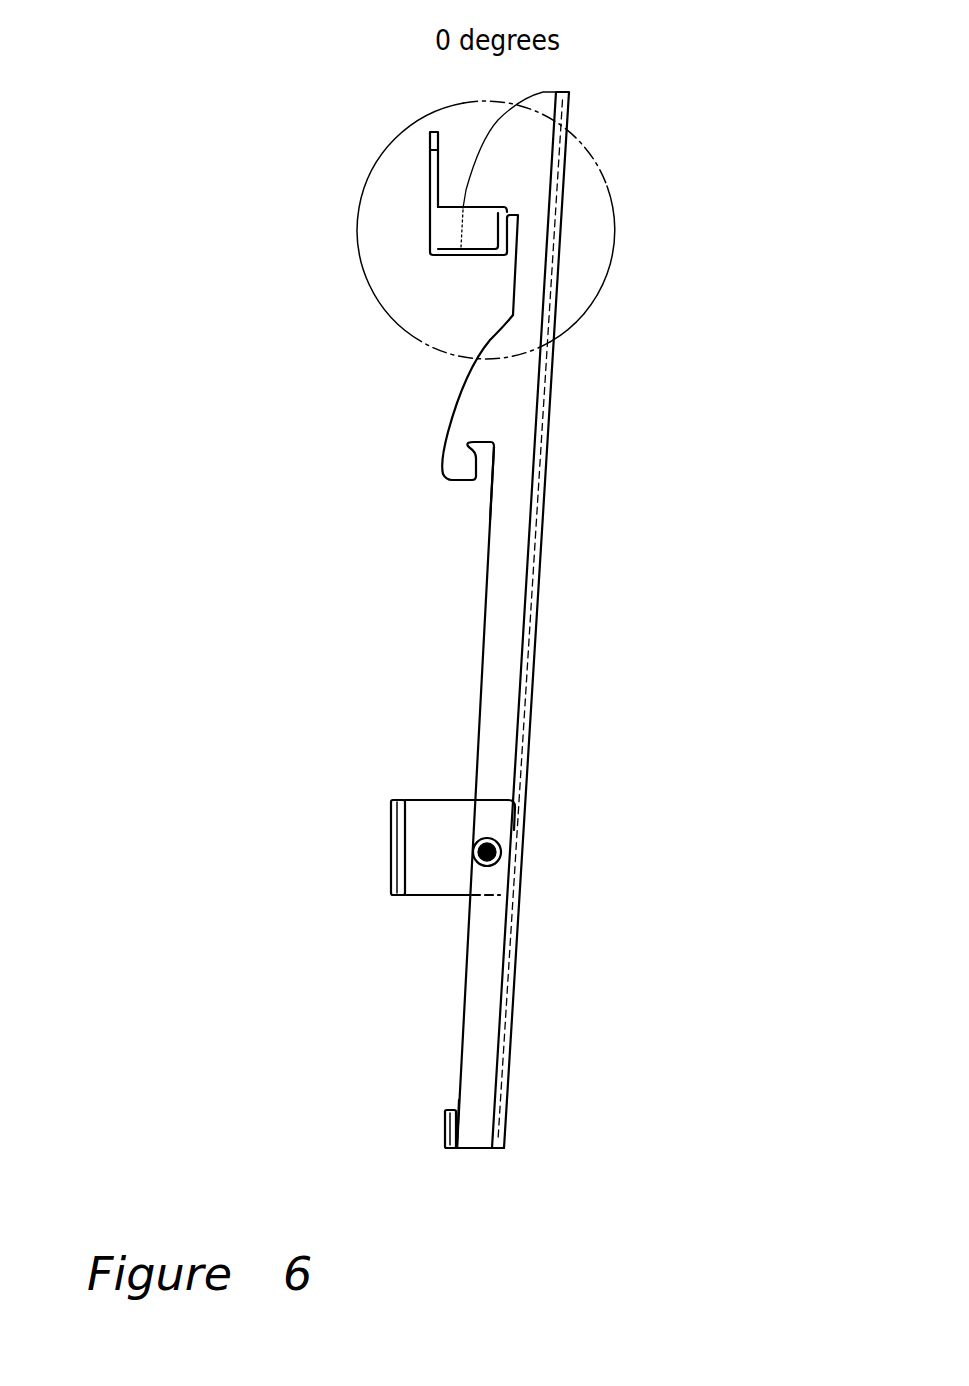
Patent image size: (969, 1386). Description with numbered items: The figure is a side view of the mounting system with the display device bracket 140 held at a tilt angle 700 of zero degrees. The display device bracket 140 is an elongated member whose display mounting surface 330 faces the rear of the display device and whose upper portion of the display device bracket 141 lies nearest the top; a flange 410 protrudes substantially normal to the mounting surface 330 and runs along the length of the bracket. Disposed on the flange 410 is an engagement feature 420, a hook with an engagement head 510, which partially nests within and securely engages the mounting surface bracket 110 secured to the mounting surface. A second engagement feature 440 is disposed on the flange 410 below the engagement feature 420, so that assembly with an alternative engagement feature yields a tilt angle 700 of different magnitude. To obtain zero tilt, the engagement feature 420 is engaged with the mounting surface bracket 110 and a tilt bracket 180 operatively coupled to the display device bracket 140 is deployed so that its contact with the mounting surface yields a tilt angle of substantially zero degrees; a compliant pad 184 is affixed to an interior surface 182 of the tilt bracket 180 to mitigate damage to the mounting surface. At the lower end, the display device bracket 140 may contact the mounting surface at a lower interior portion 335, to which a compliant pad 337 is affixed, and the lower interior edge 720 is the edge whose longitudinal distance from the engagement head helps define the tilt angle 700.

The mounting surface bracket 110 is at (427, 180).
The display device bracket 140 is at (508, 592).
The upper portion of the display device bracket 141 is at (542, 113).
The tilt bracket 180 is at (437, 848).
The interior surface of the tilt bracket 182 is at (405, 798).
The compliant pad 184 is at (392, 852).
The display mounting surface 330 is at (525, 710).
The lower interior portion 335 is at (455, 1107).
The compliant pad 337 is at (445, 1124).
The flange 410 is at (512, 453).
The engagement feature 420 is at (493, 185).
The second engagement feature 440 is at (472, 400).
The engagement head 510 is at (473, 233).
The tilt angle 700 is at (355, 232).
The lower interior edge 720 is at (455, 1147).